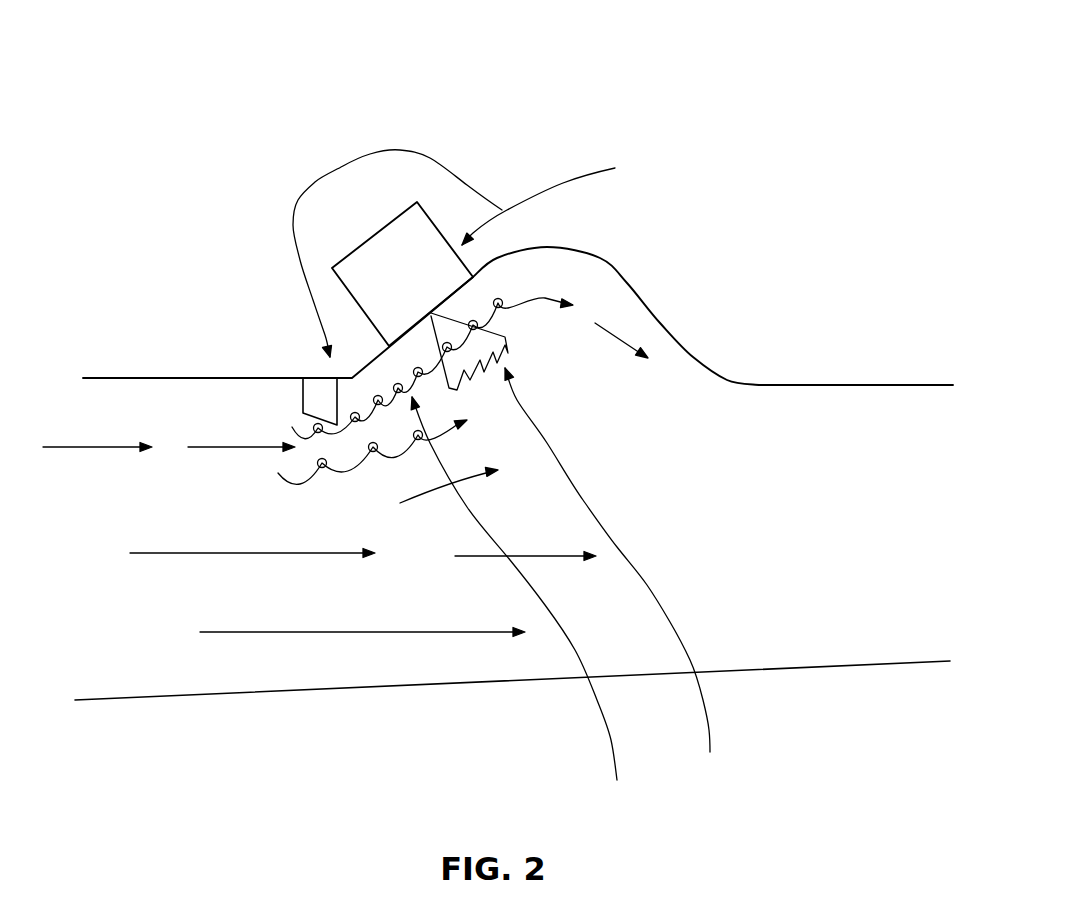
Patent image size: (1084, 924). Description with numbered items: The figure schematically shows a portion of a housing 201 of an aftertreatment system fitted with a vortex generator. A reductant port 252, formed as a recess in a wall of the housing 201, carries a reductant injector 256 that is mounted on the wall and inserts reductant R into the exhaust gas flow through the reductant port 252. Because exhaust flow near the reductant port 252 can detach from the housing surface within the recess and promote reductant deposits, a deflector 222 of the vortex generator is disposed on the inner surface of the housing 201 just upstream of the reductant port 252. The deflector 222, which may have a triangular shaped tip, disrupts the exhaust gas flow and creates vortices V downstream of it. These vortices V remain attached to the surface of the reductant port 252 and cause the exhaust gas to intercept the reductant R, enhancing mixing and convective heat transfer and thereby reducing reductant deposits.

The reductant port 252 is at (602, 260).
The deflector 222 is at (312, 390).
The reductant injector 256 is at (413, 247).
The housing 201 is at (442, 688).
The vortices V is at (518, 605).
The reductant R is at (613, 575).